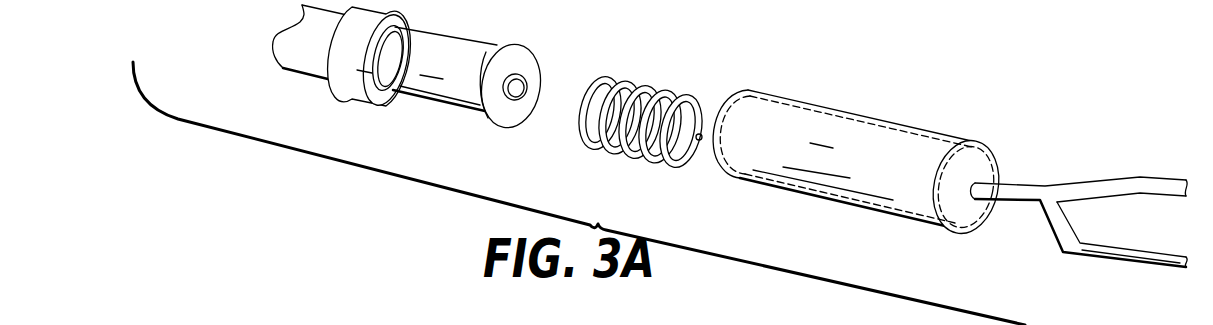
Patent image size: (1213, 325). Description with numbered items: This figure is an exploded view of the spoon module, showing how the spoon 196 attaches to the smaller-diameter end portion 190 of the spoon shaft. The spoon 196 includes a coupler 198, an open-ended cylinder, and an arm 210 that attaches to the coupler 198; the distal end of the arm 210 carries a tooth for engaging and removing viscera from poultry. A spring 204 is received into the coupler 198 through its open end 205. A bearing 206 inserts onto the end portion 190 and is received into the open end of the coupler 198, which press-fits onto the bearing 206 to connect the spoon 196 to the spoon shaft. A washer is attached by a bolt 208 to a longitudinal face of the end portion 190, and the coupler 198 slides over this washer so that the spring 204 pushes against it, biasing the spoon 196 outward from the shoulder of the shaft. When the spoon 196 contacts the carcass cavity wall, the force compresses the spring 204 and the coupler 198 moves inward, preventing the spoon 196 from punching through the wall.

The end portion 190 is at (500, 67).
The spoon 196 is at (1079, 168).
The coupler 198 is at (860, 139).
The spring 204 is at (631, 82).
The open end 205 is at (721, 88).
The bearing 206 is at (347, 84).
The bolt 208 is at (528, 82).
The arm 210 is at (1110, 188).